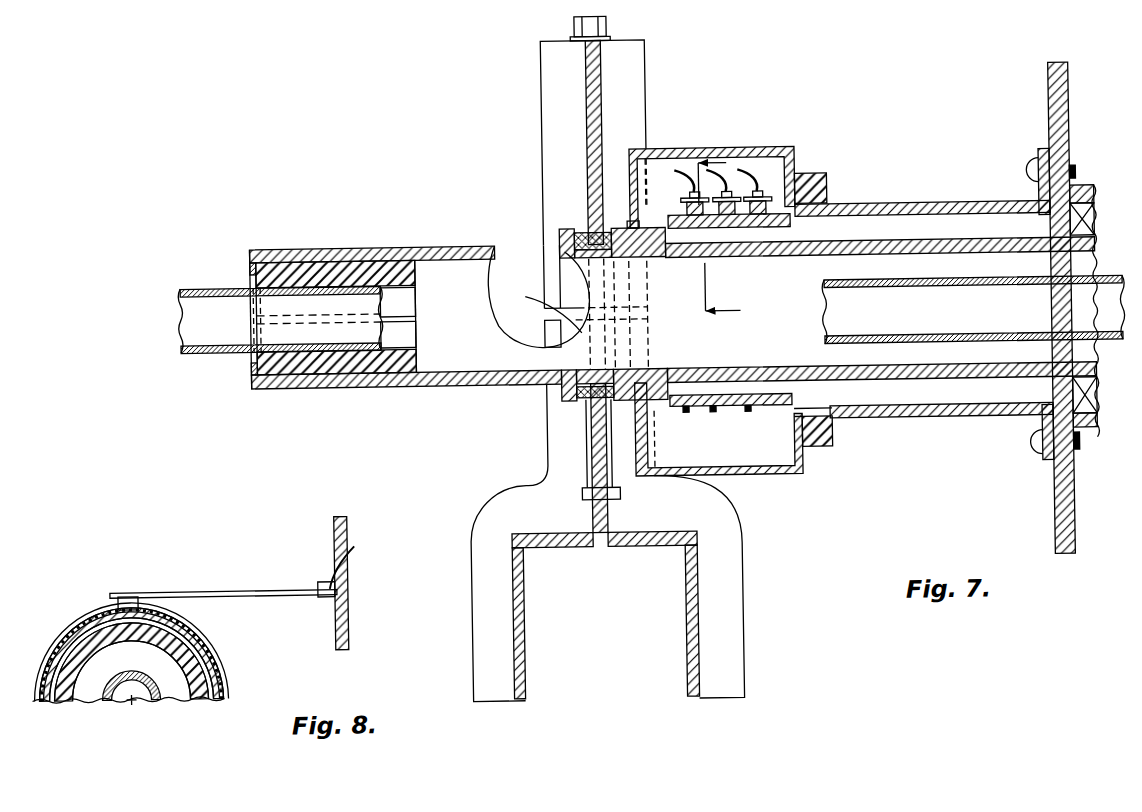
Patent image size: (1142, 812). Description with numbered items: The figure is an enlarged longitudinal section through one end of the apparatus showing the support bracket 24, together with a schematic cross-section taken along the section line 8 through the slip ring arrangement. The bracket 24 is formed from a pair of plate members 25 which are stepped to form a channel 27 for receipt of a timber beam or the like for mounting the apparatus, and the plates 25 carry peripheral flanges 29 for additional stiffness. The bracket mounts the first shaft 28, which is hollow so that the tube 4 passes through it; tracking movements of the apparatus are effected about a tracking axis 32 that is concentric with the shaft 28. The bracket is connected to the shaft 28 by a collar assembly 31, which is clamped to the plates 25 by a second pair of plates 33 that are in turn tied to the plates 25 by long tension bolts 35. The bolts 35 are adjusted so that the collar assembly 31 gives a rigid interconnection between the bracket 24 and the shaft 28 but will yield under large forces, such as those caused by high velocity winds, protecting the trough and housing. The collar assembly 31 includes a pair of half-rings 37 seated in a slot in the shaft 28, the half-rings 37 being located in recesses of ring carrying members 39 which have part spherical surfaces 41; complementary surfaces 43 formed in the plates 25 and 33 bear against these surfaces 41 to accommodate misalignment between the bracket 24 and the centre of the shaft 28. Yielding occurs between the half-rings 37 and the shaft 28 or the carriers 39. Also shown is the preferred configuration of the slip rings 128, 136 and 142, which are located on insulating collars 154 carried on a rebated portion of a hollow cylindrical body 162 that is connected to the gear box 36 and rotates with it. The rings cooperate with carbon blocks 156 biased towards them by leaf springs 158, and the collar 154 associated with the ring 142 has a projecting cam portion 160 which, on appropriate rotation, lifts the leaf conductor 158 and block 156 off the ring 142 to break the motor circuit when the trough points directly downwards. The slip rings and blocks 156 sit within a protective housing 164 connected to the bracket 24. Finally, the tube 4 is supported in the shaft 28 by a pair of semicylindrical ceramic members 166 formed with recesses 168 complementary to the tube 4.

In FIG. 7, the tube 4 is at (231, 347).
In FIG. 8, the tube 4 is at (106, 693).
In FIG. 7, the section line 8— 8 is at (746, 154).
In FIG. 7, the support bracket 24 is at (750, 541).
In FIG. 7, the plate members 25 is at (593, 465).
In FIG. 7, the channel 27 is at (647, 634).
In FIG. 7, the first shaft 28 is at (900, 386).
In FIG. 8, the first shaft 28 is at (72, 693).
In FIG. 7, the peripheral flanges 29 is at (720, 580).
In FIG. 7, the collar assembly 31 is at (562, 253).
In FIG. 8, the tracking axis 32 is at (131, 695).
In FIG. 7, the second pair of plates 33 is at (591, 66).
In FIG. 7, the tension bolts 35 is at (608, 32).
In FIG. 7, the gear box 36 is at (1061, 489).
In FIG. 7, the half-rings 37 is at (586, 292).
In FIG. 7, the ring carrying members 39 is at (560, 240).
In FIG. 7, the part spherical surfaces 41 is at (577, 232).
In FIG. 7, the complementary surfaces 43 is at (600, 229).
In FIG. 7, the slip ring 128 is at (794, 390).
In FIG. 7, the slip ring 136 is at (738, 414).
In FIG. 7, the slip ring 142 is at (703, 414).
In FIG. 8, the slip ring 142 is at (215, 660).
In FIG. 7, the insulating collars 154 is at (690, 220).
In FIG. 8, the insulating collars 154 is at (219, 684).
In FIG. 7, the carbon blocks 156 is at (697, 245).
In FIG. 8, the carbon blocks 156 is at (129, 590).
In FIG. 8, the leaf springs 158 is at (280, 587).
In FIG. 7, the projecting cam portion 160 is at (685, 414).
In FIG. 8, the projecting cam portion 160 is at (195, 630).
In FIG. 7, the hollow cylindrical body 162 is at (900, 208).
In FIG. 8, the hollow cylindrical body 162 is at (199, 691).
In FIG. 7, the protective housing 164 is at (673, 150).
In FIG. 8, the protective housing 164 is at (340, 621).
In FIG. 7, the semicylindrical ceramic members 166 is at (376, 268).
In FIG. 7, the recesses 168 is at (418, 295).